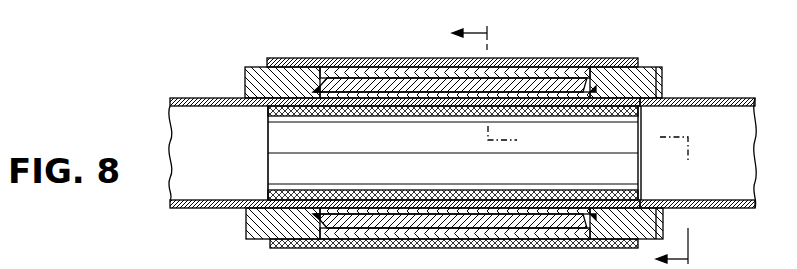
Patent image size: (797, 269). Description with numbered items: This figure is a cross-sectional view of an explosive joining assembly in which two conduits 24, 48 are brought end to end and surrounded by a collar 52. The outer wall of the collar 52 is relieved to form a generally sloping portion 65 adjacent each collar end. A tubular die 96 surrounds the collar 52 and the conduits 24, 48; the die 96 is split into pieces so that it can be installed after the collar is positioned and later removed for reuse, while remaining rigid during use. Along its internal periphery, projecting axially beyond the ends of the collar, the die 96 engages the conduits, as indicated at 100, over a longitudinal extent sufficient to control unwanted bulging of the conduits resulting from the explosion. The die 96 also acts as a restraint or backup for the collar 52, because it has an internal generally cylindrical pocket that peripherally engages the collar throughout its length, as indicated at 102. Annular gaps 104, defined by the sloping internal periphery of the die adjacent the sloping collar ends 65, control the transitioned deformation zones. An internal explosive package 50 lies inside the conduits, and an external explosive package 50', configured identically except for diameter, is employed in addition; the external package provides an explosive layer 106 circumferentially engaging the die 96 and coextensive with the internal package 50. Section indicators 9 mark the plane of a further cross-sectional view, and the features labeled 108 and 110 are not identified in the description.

The conduit 24 is at (196, 98).
The conduit 48 is at (724, 97).
The internal explosive package 50 is at (257, 153).
The external explosive package 50' is at (452, 138).
The collar 52 is at (584, 83).
The sloping portion 65 is at (330, 224).
The tubular die 96 is at (657, 66).
The die engagement with conduits 100 is at (267, 106).
The internal cylindrical pocket 102 is at (409, 77).
The annular gaps 104 is at (309, 88).
The explosive layer 106 is at (438, 70).
The braided layer 108 is at (455, 180).
The layer 110 is at (497, 263).
The section line 9- 9 is at (578, 146).